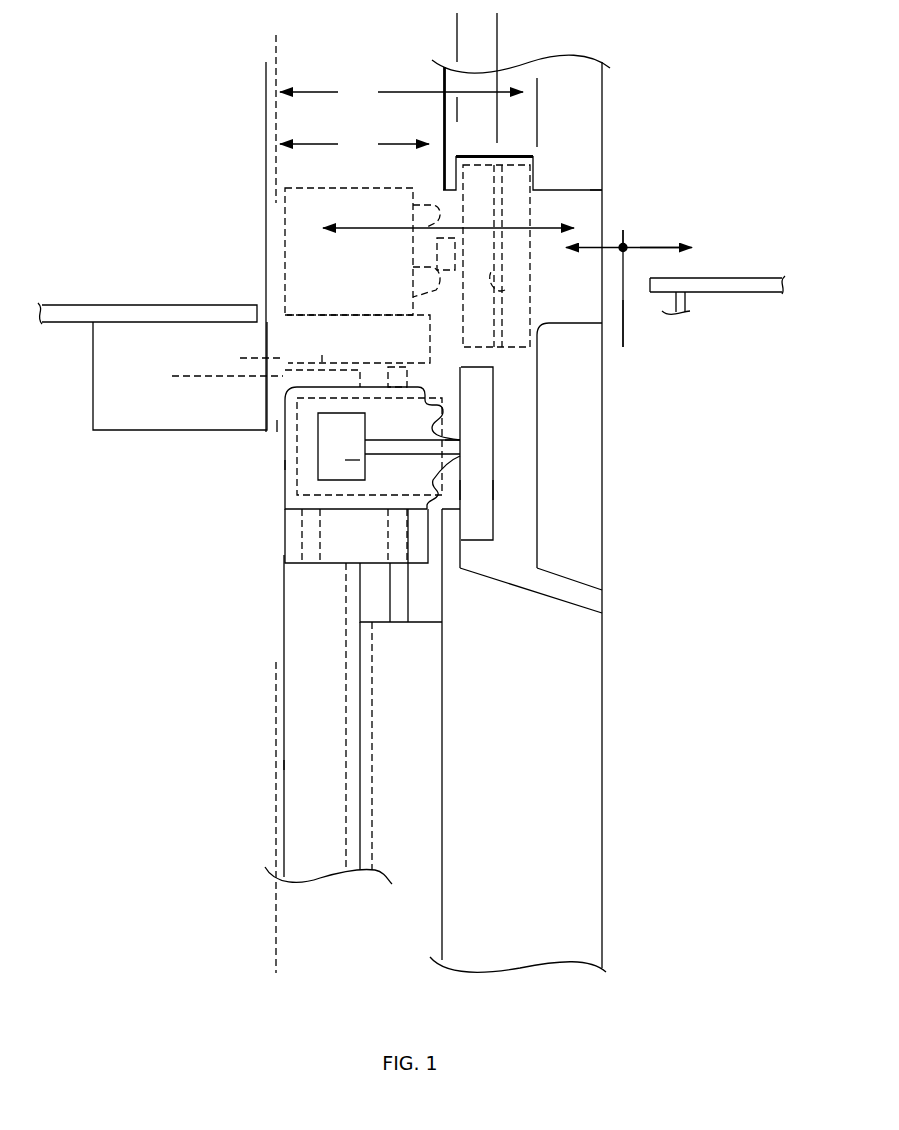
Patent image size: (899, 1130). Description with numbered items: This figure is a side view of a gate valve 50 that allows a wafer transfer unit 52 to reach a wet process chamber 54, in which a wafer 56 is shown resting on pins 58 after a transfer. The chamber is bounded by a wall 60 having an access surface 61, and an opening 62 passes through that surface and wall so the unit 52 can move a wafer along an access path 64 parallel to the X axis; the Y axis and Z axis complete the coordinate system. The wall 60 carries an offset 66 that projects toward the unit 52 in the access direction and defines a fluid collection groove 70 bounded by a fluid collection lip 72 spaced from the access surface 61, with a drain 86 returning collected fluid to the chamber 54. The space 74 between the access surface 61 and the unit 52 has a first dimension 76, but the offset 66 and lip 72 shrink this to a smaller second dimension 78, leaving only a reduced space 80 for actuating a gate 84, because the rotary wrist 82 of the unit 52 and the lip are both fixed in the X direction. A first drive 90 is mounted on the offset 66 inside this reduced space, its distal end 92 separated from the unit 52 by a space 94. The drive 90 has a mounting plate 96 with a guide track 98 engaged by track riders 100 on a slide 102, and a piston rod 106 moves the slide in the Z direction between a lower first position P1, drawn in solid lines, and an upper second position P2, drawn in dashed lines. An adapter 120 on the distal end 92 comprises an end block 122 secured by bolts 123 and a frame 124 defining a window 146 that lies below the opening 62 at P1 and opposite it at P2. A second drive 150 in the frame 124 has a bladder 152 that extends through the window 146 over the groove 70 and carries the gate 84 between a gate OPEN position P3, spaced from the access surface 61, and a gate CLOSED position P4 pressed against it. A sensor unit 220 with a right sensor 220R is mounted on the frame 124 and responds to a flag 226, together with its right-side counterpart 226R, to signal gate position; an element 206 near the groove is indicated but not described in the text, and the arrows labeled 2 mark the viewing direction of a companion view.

The section line 2 is at (276, 37).
The gate valve 50 is at (518, 493).
The wafer transfer unit 52 is at (62, 354).
The wet process chamber 54 is at (640, 178).
The wafer 56 is at (732, 281).
The pins 58 is at (686, 302).
The wall 60 is at (588, 403).
The access surface 61 is at (533, 165).
The opening 62 is at (558, 190).
The access path 64 is at (363, 230).
The offset 66 is at (518, 112).
The fluid collection groove 70 is at (518, 540).
The fluid collection lip 72 is at (450, 165).
The space 74 is at (290, 325).
The first dimension 76 is at (401, 93).
The second dimension 78 is at (354, 145).
The reduced space 80 is at (292, 123).
The rotary support 82 is at (105, 413).
The gate 84 is at (533, 210).
The drain 86 is at (583, 597).
The first drive 90 is at (238, 766).
The distal end 92 is at (330, 586).
The space 94 is at (277, 425).
The mounting plate 96 is at (425, 710).
The guide track 98 is at (373, 726).
The track riders 100 is at (345, 690).
The slide 102 is at (295, 800).
The piston rod 106 is at (397, 598).
The adapter 120 is at (268, 510).
The end block 122 is at (413, 545).
The bolts 123 is at (298, 533).
The frame 124 is at (285, 458).
The window 146 is at (434, 186).
The second drive 150 is at (326, 384).
The bladder 152 is at (378, 400).
The engagement surface 206 is at (452, 498).
The sensor unit 220 is at (300, 472).
The first sensor 220R is at (357, 465).
The flag 226 is at (378, 428).
The arm recess 226R is at (452, 448).
The first position P1 is at (283, 563).
The second position P2 is at (213, 377).
The gate OPEN position P3 is at (455, 30).
The gate CLOSED position P4 is at (500, 30).
The X axis X is at (667, 247).
The Y axis Y is at (623, 246).
The Z axis Z is at (623, 340).